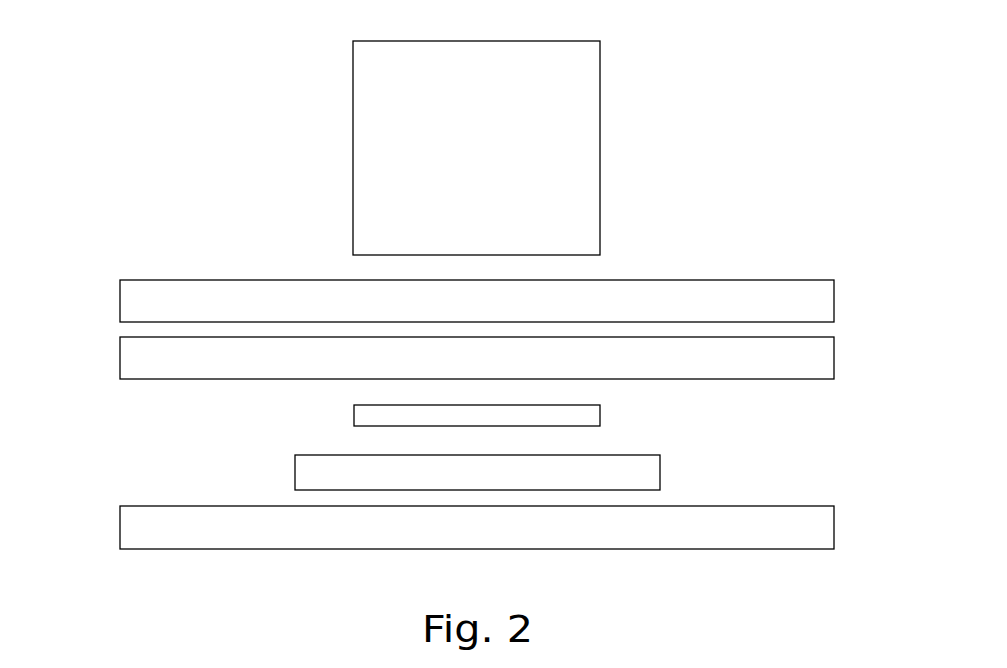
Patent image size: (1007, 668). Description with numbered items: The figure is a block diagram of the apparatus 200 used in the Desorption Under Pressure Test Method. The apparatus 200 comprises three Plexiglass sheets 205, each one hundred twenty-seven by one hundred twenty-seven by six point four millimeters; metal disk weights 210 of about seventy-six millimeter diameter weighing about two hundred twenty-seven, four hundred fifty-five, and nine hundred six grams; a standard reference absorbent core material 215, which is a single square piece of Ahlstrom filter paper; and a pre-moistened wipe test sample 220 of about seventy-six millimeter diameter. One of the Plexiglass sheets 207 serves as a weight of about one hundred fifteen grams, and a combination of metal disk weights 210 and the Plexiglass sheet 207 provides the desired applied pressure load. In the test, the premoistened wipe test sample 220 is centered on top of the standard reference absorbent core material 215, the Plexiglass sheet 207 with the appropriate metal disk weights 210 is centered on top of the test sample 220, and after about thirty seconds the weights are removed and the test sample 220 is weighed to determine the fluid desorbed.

The apparatus 200 is at (686, 116).
The Plexiglass sheets 205 is at (757, 297).
The Plexiglass sheet 207 is at (152, 299).
The metal disk weights 210 is at (392, 138).
The standard reference absorbent core material 215 is at (315, 473).
The pre-moistened wipe test sample 220 is at (380, 415).